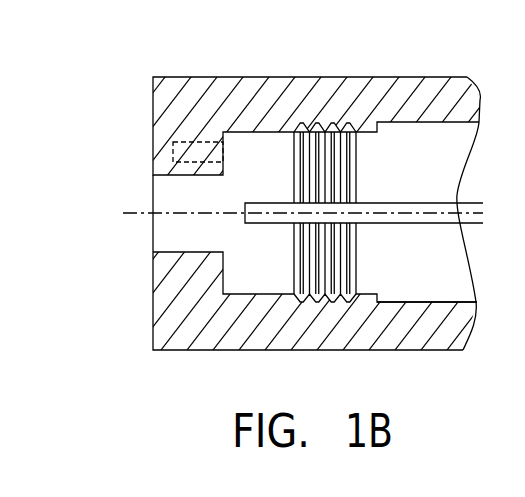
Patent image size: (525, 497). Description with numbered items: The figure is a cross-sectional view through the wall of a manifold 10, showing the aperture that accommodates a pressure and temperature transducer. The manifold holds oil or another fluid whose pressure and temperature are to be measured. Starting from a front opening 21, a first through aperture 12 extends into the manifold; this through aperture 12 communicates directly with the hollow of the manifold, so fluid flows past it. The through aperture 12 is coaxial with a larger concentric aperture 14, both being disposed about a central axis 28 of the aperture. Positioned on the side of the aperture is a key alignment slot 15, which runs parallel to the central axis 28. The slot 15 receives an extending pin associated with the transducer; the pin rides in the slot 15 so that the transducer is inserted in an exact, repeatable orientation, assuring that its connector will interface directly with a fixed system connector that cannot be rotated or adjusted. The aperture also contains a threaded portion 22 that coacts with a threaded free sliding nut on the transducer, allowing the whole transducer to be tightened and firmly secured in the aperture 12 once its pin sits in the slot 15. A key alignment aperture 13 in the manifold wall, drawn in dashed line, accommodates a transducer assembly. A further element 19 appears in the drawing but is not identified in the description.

The manifold wall 10 is at (403, 77).
The first through aperture 12 is at (152, 238).
The key alignment aperture 13 is at (198, 142).
The concentric aperture 14 is at (448, 282).
The key alignment slot 15 is at (247, 206).
The threaded insert 19 is at (298, 260).
The front opening 21 is at (160, 181).
The threaded portion 22 is at (333, 122).
The central axis 28 is at (468, 212).